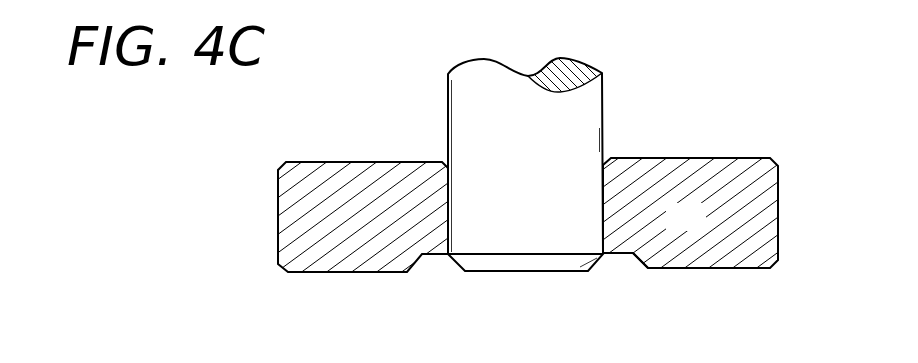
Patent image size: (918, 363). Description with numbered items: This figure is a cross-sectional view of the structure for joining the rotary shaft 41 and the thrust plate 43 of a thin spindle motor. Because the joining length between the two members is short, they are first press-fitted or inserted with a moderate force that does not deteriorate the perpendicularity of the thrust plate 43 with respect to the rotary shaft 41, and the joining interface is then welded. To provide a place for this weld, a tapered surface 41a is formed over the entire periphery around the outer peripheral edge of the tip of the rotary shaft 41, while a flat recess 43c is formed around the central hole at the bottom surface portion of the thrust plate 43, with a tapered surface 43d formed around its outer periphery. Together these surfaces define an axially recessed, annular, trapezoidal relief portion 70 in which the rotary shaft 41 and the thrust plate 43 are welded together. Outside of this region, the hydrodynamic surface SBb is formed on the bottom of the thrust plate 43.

The rotary shaft 41 is at (538, 168).
The tapered surface 41a is at (458, 271).
The thrust plate 43 is at (699, 228).
The flat recess 43c is at (612, 257).
The tapered surface 43d is at (640, 262).
The relief portion 70 is at (433, 281).
The hydrodynamic surface SBb is at (740, 270).